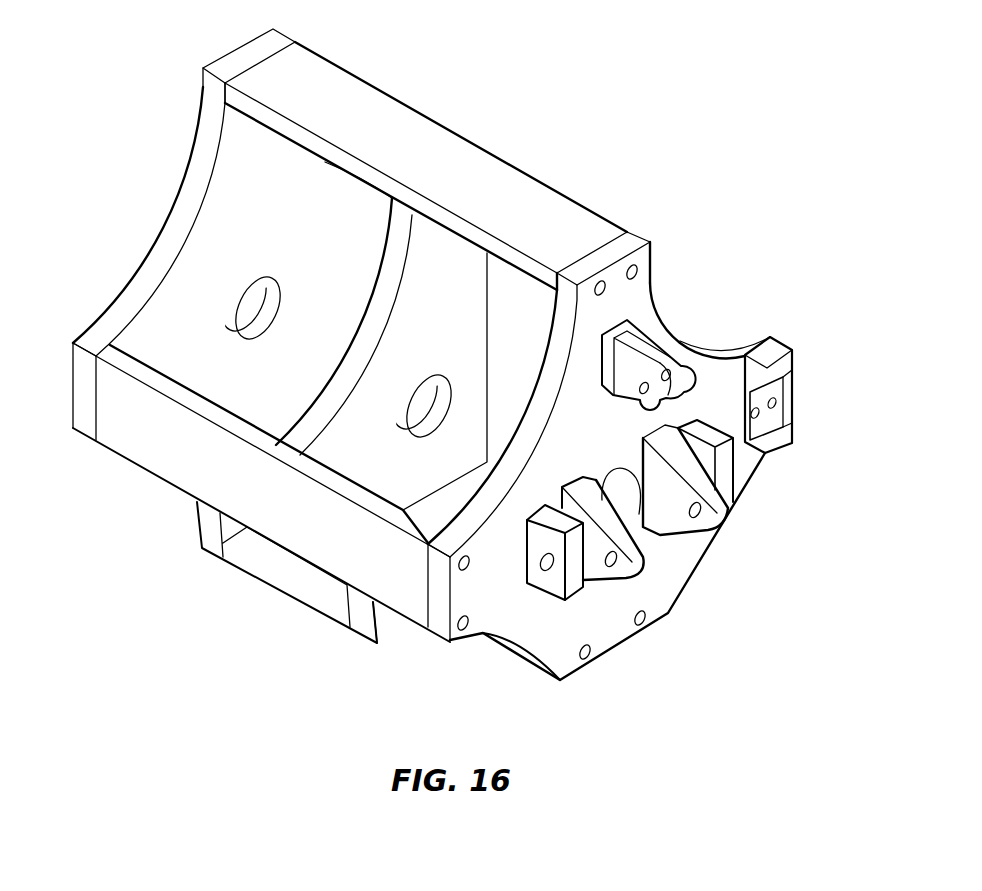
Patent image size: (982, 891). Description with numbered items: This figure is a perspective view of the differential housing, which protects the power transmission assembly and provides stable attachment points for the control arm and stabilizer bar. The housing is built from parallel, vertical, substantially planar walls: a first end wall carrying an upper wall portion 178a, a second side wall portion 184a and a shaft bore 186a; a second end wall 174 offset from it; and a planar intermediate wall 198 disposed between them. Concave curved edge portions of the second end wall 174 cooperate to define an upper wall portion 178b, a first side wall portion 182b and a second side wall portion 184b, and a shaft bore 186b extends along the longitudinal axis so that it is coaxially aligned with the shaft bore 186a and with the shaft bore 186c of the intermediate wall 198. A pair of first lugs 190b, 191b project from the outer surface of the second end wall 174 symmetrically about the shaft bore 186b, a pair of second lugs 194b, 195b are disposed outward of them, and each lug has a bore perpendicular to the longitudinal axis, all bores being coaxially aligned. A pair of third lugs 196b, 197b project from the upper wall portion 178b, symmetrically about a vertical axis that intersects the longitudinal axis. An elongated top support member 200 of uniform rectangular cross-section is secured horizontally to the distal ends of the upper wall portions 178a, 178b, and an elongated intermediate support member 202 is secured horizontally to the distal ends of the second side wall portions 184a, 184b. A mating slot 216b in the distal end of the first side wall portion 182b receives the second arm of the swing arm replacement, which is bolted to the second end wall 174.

The second end wall 174 is at (600, 462).
The upper wall portion 178a is at (221, 192).
The upper wall portion 178b is at (642, 283).
The first side wall portion 182b is at (812, 409).
The second side wall portion 184a is at (160, 350).
The second side wall portion 184b is at (463, 593).
The shaft bore 186a is at (265, 318).
The shaft bore 186b is at (620, 475).
The shaft bore 186c is at (440, 407).
The first lug 190b is at (739, 420).
The first lug 191b is at (642, 577).
The second lug 194b is at (707, 433).
The second lug 195b is at (553, 597).
The third lug 196b is at (671, 339).
The third lug 197b is at (643, 392).
The intermediate wall 198 is at (411, 316).
The top support member 200 is at (565, 220).
The intermediate support member 202 is at (370, 578).
The mating slot 216b is at (785, 400).